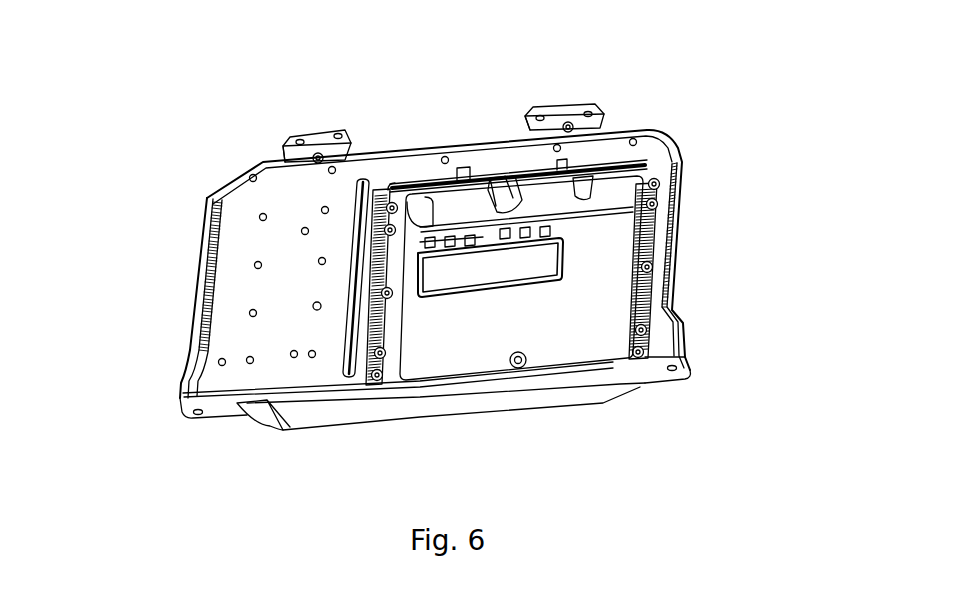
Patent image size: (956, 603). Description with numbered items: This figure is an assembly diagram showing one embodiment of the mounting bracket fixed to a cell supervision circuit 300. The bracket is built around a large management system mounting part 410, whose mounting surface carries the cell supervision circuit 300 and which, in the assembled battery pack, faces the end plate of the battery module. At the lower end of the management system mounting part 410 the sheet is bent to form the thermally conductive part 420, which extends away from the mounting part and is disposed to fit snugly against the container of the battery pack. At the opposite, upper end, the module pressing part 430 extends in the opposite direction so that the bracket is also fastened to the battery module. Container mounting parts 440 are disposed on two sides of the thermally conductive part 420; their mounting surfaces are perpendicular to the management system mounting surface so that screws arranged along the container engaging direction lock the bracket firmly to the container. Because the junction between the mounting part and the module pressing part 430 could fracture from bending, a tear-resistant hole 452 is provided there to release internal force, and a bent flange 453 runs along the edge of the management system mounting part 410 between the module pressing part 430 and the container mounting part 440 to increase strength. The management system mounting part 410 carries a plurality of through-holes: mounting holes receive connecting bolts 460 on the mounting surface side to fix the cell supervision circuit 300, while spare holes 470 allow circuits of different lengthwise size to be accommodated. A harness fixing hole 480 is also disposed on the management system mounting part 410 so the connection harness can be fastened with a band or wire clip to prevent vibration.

The cell supervision circuit 300 is at (560, 340).
The management system mounting part 410 is at (320, 188).
The thermally conductive part 420 is at (333, 427).
The module pressing part 430 is at (545, 112).
The container mounting part 440 is at (678, 375).
The tear-resistant hole 452 is at (318, 152).
The bent flange 453 is at (204, 258).
The connecting bolt 460 is at (655, 205).
The spare hole 470 is at (233, 237).
The harness fixing hole 480 is at (317, 306).